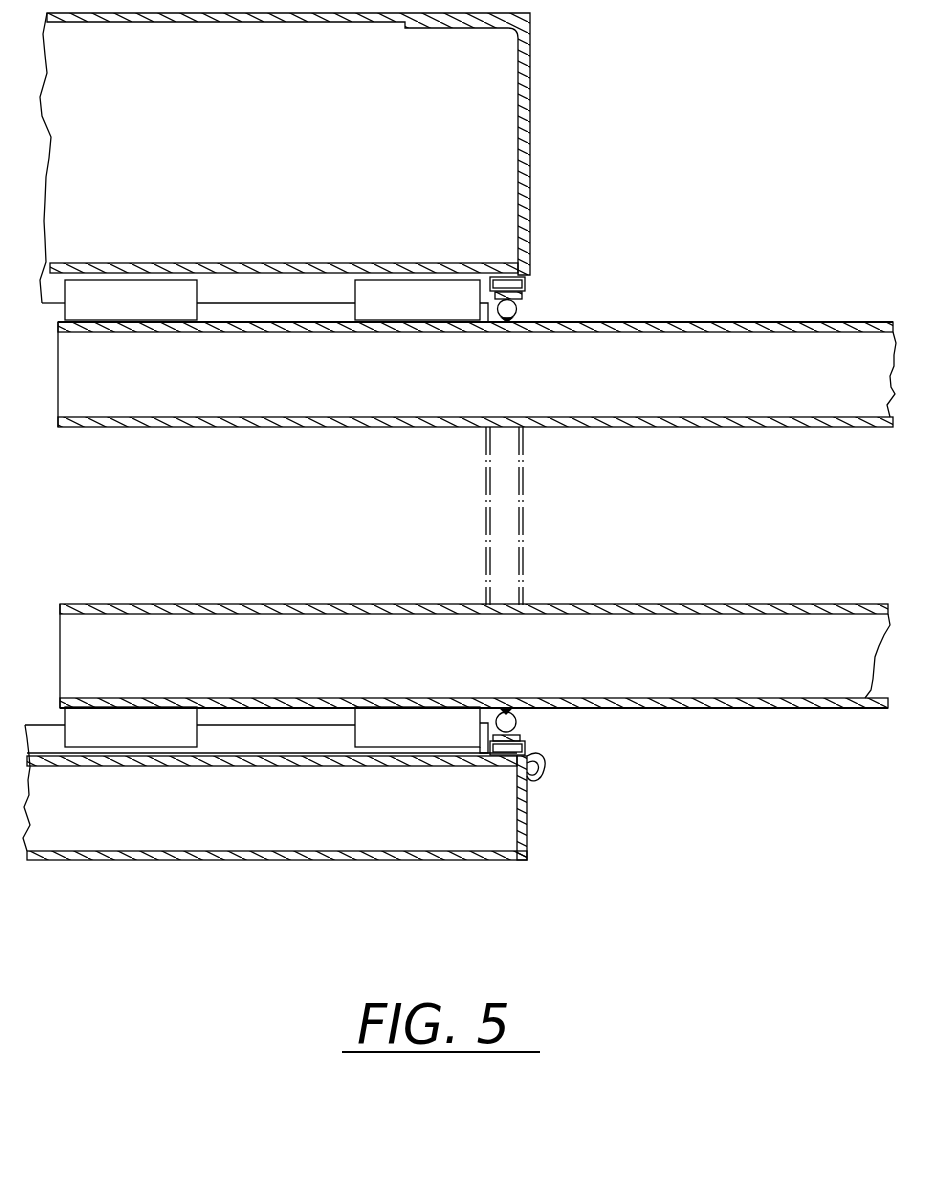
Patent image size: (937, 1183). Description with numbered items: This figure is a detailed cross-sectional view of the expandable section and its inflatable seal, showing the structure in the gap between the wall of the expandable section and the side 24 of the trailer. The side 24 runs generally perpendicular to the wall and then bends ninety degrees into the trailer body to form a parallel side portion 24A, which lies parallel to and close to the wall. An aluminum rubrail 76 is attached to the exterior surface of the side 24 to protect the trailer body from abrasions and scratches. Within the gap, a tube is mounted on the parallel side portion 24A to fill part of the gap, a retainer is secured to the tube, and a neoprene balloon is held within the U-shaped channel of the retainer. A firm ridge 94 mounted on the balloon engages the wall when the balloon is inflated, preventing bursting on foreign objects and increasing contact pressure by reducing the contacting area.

The side 24 is at (308, 792).
The parallel side portion 24A is at (500, 758).
The aluminum rubrail 76 is at (530, 813).
The firm ridge 94 is at (507, 707).